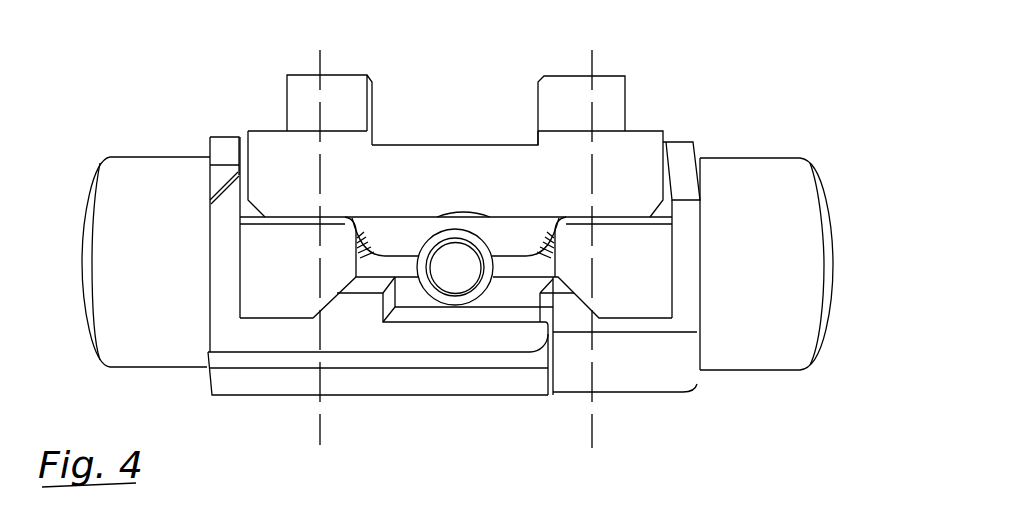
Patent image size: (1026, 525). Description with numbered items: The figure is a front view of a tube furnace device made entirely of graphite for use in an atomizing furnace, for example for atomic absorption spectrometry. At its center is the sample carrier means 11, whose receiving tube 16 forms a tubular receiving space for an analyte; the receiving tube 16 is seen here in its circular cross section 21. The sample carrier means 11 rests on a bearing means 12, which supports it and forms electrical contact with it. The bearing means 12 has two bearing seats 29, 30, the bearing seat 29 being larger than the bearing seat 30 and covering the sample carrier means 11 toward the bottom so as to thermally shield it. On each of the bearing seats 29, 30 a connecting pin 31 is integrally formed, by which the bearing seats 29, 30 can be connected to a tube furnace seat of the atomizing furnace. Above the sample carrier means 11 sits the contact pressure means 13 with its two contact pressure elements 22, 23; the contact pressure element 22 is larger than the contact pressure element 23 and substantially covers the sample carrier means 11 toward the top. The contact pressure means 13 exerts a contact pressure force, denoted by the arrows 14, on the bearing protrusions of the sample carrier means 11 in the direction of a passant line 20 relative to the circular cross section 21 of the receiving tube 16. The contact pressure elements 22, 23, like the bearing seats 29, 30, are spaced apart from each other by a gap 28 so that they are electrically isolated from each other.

The sample carrier means 11 is at (505, 215).
The bearing means 12 is at (782, 140).
The contact pressure means 13 is at (655, 105).
The arrows 14 is at (320, 215).
The receiving tube 16 is at (460, 311).
The passant line 20 is at (316, 430).
The circular cross section 21 is at (432, 215).
The contact pressure element 22 is at (392, 175).
The contact pressure element 23 is at (617, 150).
The gap 28 is at (545, 150).
The bearing seat 29 is at (223, 159).
The bearing seat 30 is at (680, 173).
The connecting pin 31 is at (115, 292).